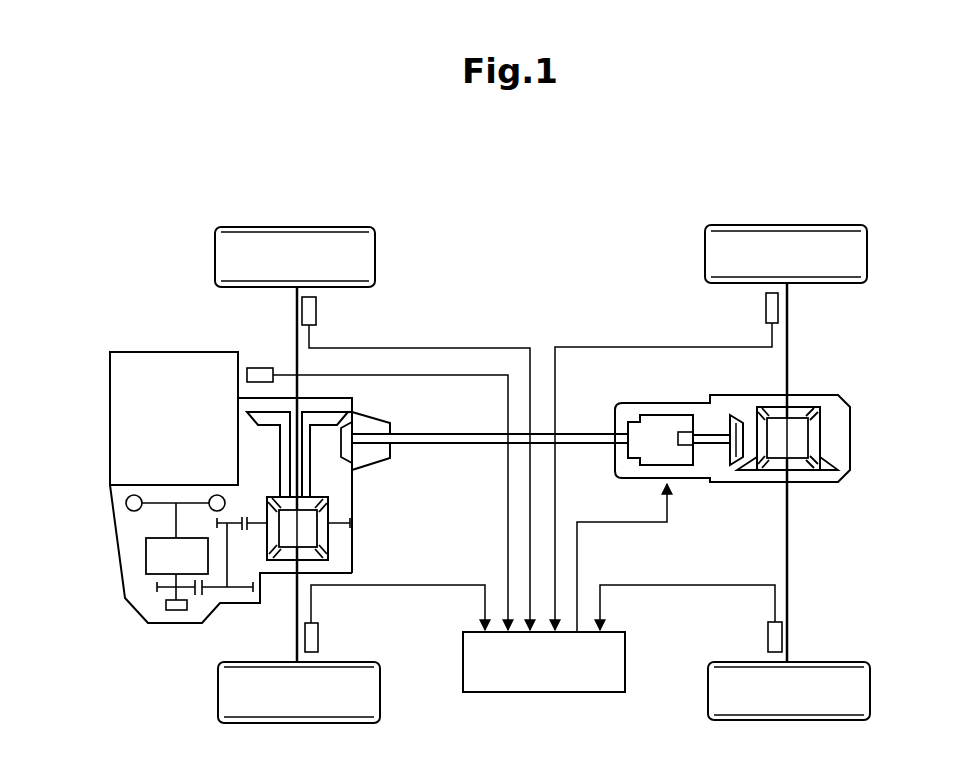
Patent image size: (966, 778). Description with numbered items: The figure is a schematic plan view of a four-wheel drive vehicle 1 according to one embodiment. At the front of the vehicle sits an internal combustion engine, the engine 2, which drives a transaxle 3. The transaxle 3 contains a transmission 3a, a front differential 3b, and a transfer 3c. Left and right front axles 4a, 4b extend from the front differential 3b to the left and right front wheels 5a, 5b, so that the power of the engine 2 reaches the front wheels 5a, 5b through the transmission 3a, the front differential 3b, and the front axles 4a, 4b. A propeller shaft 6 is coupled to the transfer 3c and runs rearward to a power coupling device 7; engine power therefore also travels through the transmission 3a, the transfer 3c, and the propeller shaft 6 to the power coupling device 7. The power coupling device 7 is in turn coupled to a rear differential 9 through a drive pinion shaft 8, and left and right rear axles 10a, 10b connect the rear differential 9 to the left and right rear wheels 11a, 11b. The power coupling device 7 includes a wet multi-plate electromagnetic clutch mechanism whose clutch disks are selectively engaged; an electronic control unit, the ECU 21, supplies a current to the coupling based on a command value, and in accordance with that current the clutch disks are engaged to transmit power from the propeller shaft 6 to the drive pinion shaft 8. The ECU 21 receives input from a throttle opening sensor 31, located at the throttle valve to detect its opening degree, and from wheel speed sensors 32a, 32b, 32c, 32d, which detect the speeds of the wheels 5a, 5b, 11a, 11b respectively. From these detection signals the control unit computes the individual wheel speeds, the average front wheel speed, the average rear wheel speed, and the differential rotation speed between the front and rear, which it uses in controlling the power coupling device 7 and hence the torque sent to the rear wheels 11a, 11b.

The four-wheel drive vehicle 1 is at (879, 190).
The engine 2 is at (175, 353).
The transaxle 3 is at (157, 629).
The transmission 3a is at (118, 524).
The front differential 3b is at (332, 546).
The transfer 3c is at (375, 421).
The left front axle 4a is at (297, 628).
The right front axle 4b is at (297, 308).
The left front wheel 5a is at (218, 693).
The right front wheel 5b is at (215, 252).
The propeller shaft 6 is at (457, 433).
The power coupling device 7 is at (658, 415).
The drive pinion shaft 8 is at (723, 414).
The rear differential 9 is at (820, 437).
The left rear axle 10a is at (790, 530).
The right rear axle 10b is at (790, 345).
The left rear wheel 11a is at (870, 692).
The right rear wheel 11b is at (867, 255).
The electronic control unit (ECU) 21 is at (625, 663).
The throttle opening sensor 31 is at (258, 368).
The wheel speed sensor 32a is at (318, 638).
The wheel speed sensor 32b is at (316, 312).
The wheel speed sensor 32c is at (768, 633).
The wheel speed sensor 32d is at (766, 307).